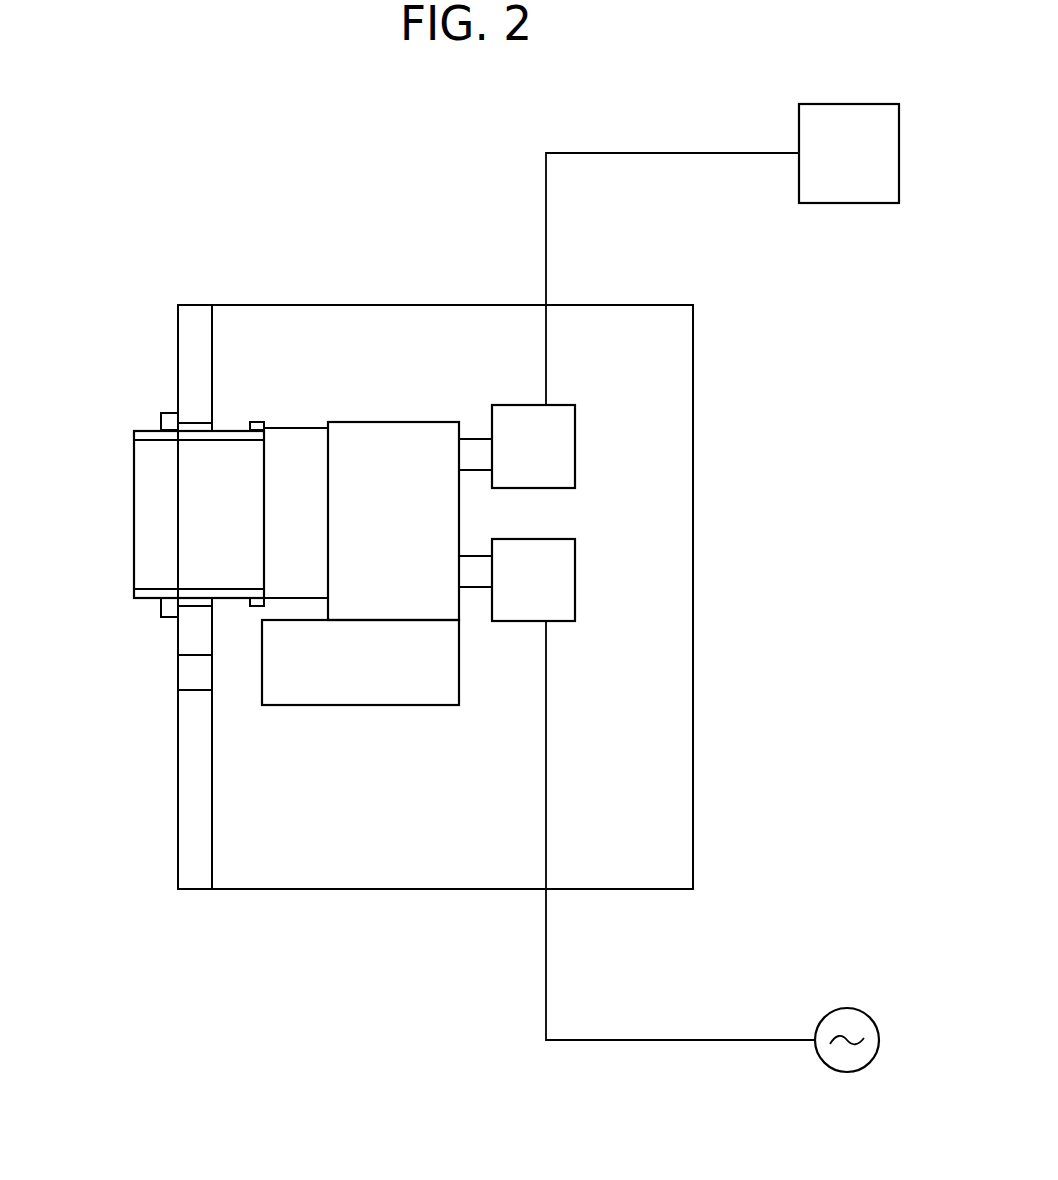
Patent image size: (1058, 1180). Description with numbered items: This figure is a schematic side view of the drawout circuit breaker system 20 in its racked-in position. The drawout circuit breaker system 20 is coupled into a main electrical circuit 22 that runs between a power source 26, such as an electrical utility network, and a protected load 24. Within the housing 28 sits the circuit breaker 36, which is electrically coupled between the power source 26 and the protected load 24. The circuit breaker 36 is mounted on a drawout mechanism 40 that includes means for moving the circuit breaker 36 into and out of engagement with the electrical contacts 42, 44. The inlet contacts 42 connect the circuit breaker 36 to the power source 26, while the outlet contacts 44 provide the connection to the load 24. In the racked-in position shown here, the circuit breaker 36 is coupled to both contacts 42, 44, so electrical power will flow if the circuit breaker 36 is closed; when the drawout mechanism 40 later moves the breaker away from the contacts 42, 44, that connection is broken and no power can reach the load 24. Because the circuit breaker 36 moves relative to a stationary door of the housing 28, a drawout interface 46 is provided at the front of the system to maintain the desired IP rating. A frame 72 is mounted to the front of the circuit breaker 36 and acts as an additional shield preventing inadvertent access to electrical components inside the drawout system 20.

The drawout circuit breaker system 20 is at (137, 336).
The main electrical circuit 22 is at (597, 153).
The protected load 24 is at (845, 205).
The power source 26 is at (843, 1072).
The housing 28 is at (240, 305).
The circuit breaker 36 is at (392, 422).
The drawout mechanism 40 is at (353, 705).
The inlet contacts 42 is at (576, 577).
The outlet contacts 44 is at (576, 446).
The drawout interface 46 is at (122, 574).
The frame 72 is at (295, 428).